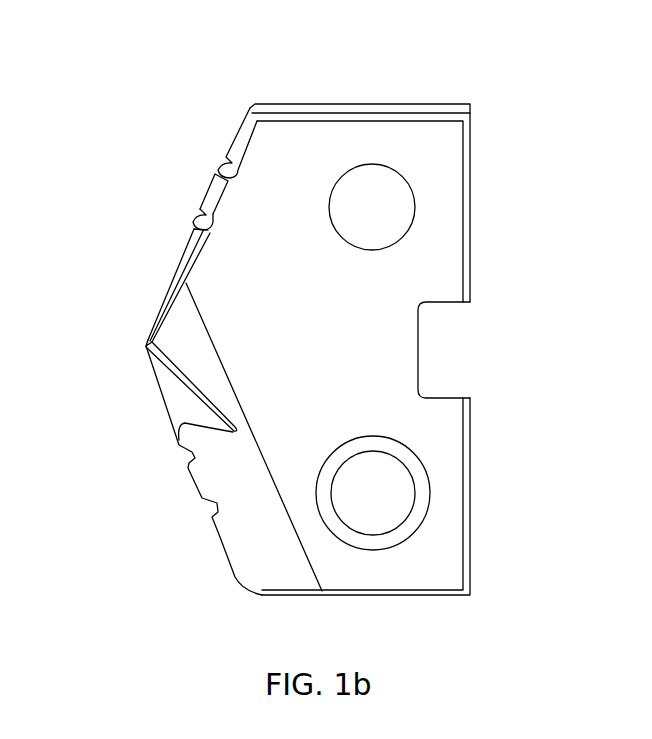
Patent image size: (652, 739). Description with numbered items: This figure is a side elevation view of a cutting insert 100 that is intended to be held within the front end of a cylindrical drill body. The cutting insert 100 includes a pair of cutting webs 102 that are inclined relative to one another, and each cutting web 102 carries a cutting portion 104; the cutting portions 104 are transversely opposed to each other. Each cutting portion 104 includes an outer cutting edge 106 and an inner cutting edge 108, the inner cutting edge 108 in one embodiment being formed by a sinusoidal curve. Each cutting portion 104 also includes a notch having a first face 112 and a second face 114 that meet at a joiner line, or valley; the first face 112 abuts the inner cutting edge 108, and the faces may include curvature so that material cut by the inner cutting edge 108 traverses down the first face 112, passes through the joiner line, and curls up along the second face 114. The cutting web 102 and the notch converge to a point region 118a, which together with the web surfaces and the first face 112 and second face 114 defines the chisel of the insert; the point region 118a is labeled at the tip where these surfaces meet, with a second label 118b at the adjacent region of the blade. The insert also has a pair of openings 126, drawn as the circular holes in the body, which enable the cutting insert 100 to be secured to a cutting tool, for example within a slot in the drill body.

The cutting insert 100 is at (320, 62).
The cutting web 102 is at (233, 130).
The cutting portion 104 is at (124, 252).
The outer cutting edge 106 is at (220, 542).
The inner cutting edge 108 is at (210, 188).
The first face 112 is at (177, 415).
The second face 114 is at (148, 339).
The point region 118a is at (150, 344).
The lower blade edge 118b is at (170, 370).
The opening 126 is at (412, 215).